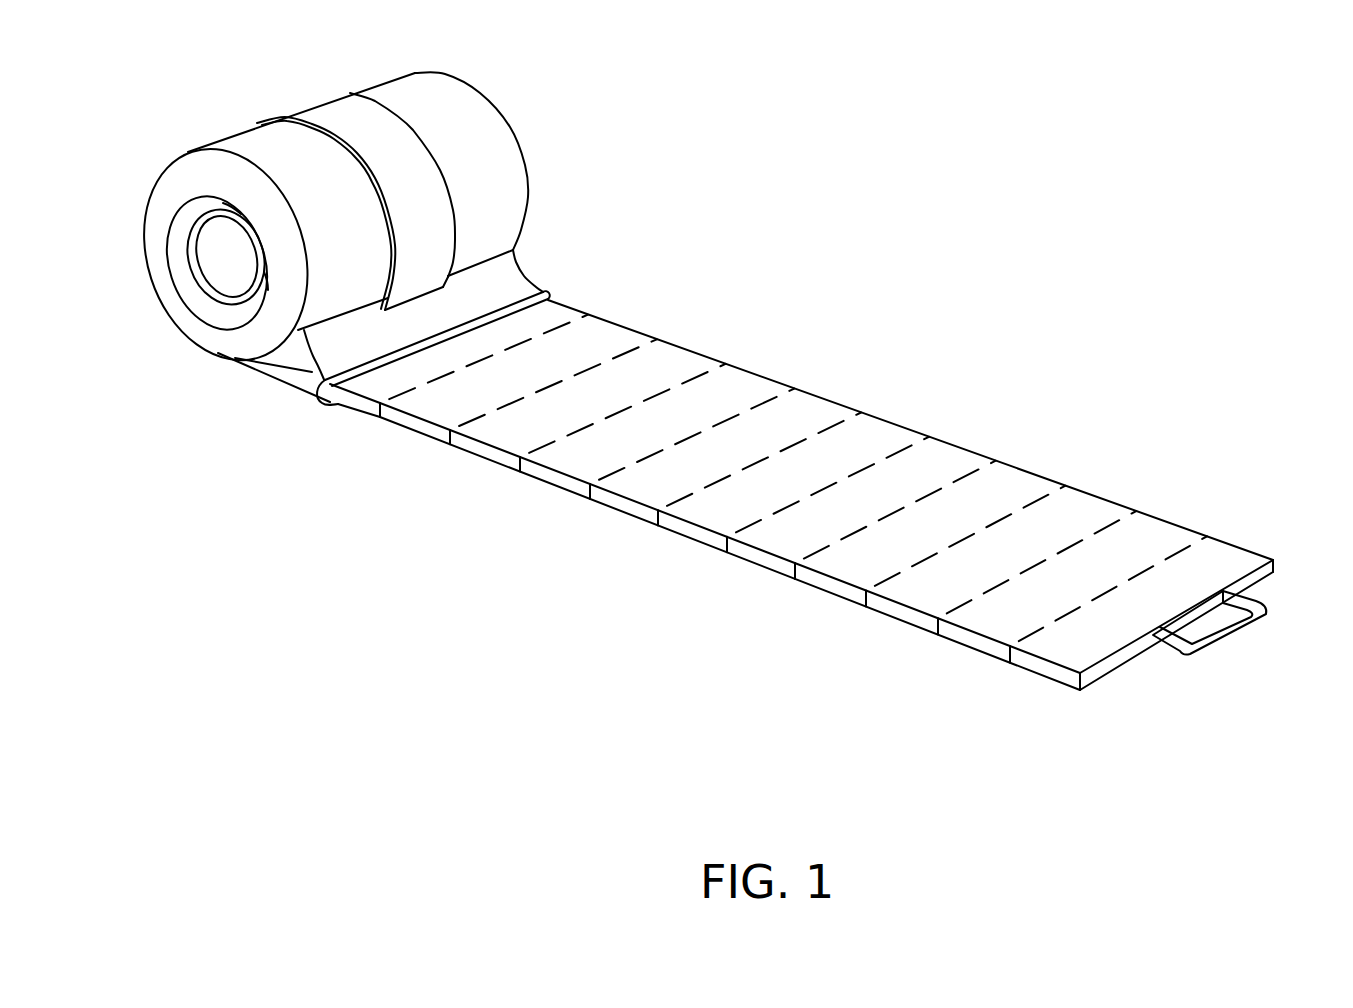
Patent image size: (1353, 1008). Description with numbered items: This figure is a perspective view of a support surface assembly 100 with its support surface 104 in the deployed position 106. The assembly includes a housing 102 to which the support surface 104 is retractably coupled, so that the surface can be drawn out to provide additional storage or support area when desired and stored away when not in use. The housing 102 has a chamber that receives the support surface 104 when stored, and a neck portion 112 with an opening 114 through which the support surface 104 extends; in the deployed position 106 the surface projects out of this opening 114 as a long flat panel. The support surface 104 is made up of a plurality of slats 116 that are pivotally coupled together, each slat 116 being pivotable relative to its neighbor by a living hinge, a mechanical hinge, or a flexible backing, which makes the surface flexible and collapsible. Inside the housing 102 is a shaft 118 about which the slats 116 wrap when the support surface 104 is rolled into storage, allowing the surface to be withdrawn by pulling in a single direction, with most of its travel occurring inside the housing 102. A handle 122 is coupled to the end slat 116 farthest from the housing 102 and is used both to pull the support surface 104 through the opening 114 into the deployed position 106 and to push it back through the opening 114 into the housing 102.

The support surface assembly 100 is at (535, 90).
The housing 102 is at (210, 157).
The support surface 104 is at (928, 402).
The deployed position 106 is at (1086, 452).
The neck portion 112 is at (293, 382).
The opening 114 is at (522, 323).
The slats 116 is at (767, 545).
The shaft 118 is at (227, 258).
The handle 122 is at (1230, 633).